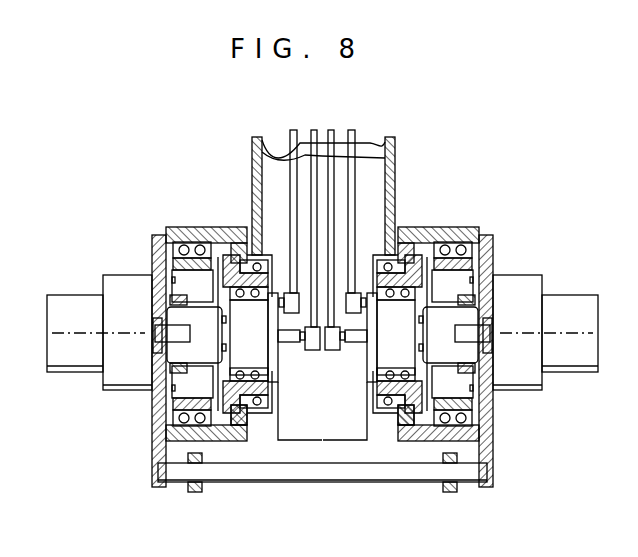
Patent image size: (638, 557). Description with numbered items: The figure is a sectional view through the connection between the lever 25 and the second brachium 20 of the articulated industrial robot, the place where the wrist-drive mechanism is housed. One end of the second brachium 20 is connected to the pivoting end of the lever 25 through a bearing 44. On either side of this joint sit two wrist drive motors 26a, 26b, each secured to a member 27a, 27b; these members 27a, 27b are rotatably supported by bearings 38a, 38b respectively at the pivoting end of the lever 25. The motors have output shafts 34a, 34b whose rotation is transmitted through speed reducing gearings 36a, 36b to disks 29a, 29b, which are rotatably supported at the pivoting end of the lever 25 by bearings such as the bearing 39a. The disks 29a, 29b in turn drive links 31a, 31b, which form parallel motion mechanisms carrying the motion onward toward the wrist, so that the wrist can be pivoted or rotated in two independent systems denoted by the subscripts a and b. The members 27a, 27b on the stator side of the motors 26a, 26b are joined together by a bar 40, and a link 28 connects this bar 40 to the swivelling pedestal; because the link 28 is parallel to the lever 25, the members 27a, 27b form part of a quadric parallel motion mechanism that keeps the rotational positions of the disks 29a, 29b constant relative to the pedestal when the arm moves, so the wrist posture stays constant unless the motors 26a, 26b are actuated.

The second brachium 20 is at (393, 142).
The link 31a is at (300, 156).
The link 31b is at (332, 170).
The bearing 44 is at (254, 256).
The lever 25 is at (211, 228).
The bearing 38a is at (176, 241).
The bearing 38b is at (467, 241).
The member 27a is at (162, 236).
The member 27b is at (486, 250).
The wrist drive motor 26a is at (127, 272).
The wrist drive motor 26b is at (518, 290).
The output shaft 34a is at (167, 340).
The output shaft 34b is at (477, 340).
The speed reducing gearing 36a is at (197, 357).
The speed reducing gearing 36b is at (446, 357).
The disk 29a is at (276, 362).
The disk 29b is at (368, 370).
The bearing 39a is at (242, 412).
The bar 40 is at (318, 483).
The link 28 is at (195, 493).